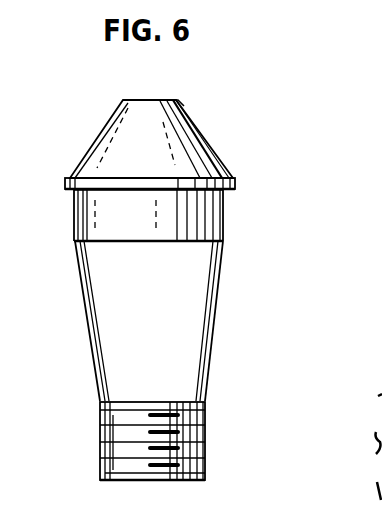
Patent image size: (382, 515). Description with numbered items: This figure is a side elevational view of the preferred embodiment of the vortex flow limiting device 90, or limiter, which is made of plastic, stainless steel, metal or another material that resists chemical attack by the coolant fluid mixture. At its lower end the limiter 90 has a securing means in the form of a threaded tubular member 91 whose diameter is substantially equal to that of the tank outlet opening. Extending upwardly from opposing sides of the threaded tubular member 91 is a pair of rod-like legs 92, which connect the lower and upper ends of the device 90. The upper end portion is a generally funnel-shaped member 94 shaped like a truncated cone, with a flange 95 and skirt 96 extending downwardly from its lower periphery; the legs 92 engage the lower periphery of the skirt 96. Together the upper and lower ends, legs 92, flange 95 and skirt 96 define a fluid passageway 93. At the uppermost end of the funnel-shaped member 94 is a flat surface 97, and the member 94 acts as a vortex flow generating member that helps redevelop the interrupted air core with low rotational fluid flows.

The vortex flow limiting device 90 is at (248, 136).
The threaded tubular member 91 is at (100, 444).
The rod-like legs 92 is at (92, 341).
The fluid passageway 93 is at (132, 306).
The funnel-shaped member 94 is at (182, 133).
The flange 95 is at (236, 185).
The skirt 96 is at (213, 221).
The flat surface 97 is at (173, 100).